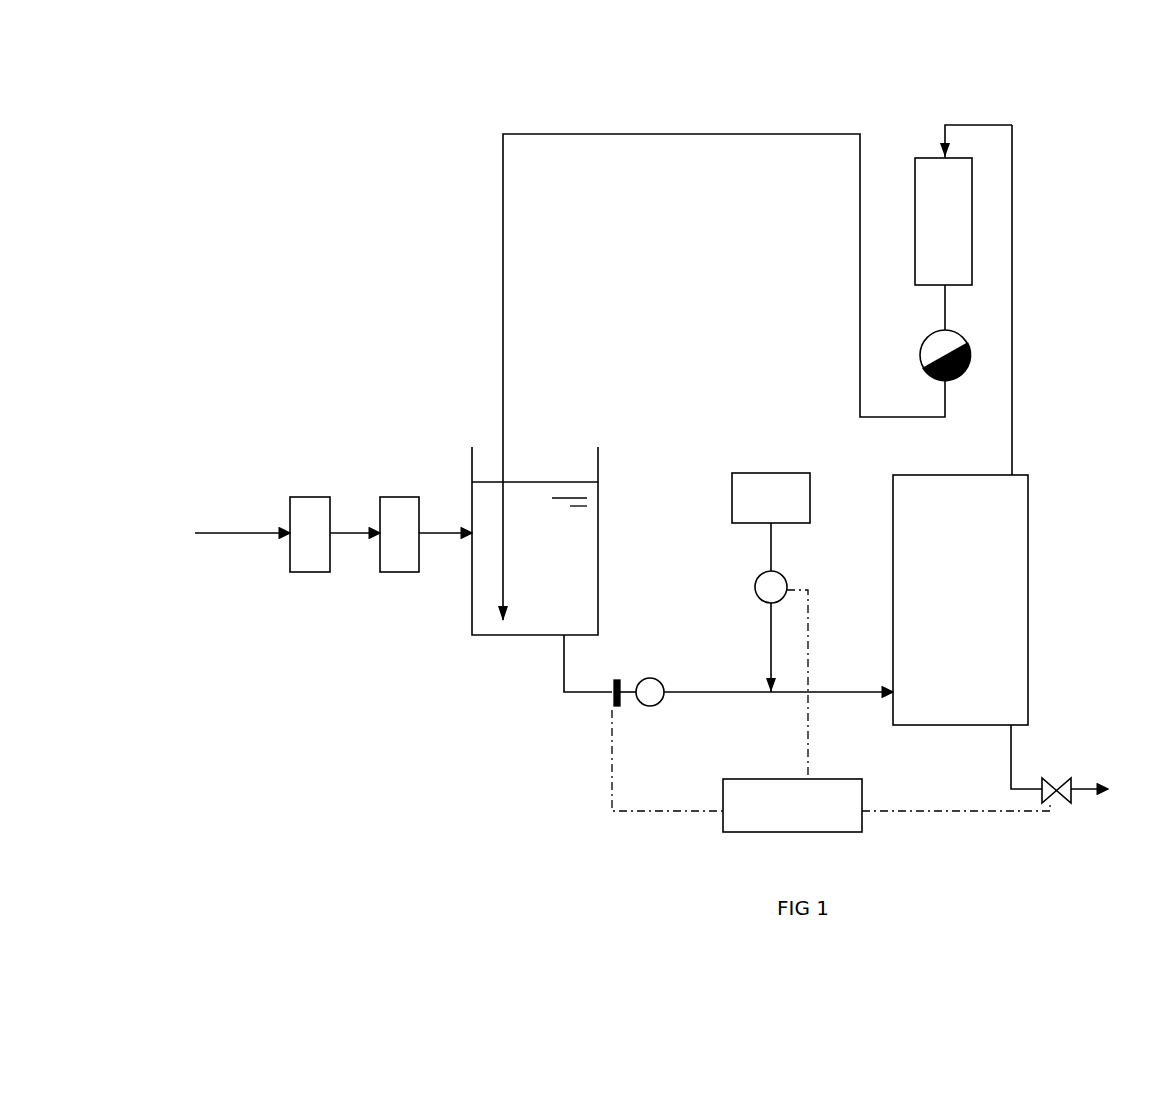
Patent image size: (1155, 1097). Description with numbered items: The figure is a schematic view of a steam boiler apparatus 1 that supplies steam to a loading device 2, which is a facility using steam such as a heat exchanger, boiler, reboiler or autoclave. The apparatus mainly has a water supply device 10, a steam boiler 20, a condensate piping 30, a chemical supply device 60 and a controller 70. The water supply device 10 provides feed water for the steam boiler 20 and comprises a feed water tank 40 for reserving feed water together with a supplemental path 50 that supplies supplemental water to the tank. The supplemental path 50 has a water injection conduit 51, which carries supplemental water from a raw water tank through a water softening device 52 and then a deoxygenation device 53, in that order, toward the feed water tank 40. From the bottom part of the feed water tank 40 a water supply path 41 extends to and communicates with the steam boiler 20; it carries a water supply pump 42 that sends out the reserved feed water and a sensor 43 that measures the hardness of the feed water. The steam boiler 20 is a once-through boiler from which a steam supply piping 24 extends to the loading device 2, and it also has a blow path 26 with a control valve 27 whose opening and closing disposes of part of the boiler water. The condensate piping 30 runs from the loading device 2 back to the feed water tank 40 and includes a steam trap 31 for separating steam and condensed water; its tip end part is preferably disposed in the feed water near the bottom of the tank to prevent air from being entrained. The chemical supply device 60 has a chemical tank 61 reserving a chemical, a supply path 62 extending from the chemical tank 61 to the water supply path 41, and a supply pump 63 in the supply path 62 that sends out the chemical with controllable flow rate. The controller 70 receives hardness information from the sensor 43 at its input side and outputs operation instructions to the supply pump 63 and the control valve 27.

The steam boiler apparatus 1 is at (340, 388).
The loading device 2 is at (972, 237).
The water supply device 10 is at (555, 712).
The steam boiler 20 is at (1030, 637).
The steam supply piping 24 is at (1012, 378).
The blow path 26 is at (1082, 783).
The control valve 27 is at (1062, 780).
The condensate piping 30 is at (500, 217).
The steam trap 31 is at (970, 345).
The feed water tank 40 is at (490, 636).
The water supply path 41 is at (730, 690).
The water supply pump 42 is at (657, 680).
The sensor 43 is at (620, 710).
The supplemental path 50 is at (357, 592).
The water injection conduit 51 is at (237, 530).
The water softening device 52 is at (305, 497).
The deoxygenation device 53 is at (395, 497).
The chemical supply device 60 is at (712, 478).
The chemical tank 61 is at (812, 497).
The supply path 62 is at (770, 552).
The supply pump 63 is at (787, 578).
The controller 70 is at (865, 790).